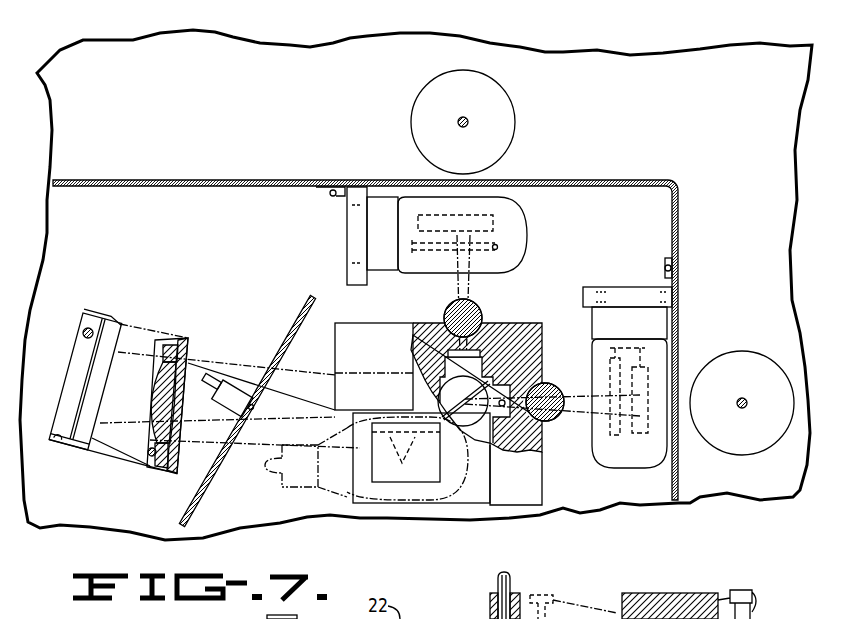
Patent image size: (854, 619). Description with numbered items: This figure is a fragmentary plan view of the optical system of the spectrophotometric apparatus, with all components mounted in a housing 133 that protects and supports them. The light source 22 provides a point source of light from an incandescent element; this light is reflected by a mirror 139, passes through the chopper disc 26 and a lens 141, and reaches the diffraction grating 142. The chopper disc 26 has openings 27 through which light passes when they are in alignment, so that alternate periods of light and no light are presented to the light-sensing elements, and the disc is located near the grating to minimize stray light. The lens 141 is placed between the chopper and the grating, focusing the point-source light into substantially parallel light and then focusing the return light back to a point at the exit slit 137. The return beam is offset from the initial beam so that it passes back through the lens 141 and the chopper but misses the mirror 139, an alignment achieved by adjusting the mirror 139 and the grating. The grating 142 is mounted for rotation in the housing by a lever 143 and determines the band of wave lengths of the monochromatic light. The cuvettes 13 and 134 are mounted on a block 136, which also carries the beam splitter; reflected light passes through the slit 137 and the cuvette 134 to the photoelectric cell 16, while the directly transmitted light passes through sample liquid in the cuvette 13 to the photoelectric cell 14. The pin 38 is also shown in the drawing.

The housing 133 is at (608, 182).
The photoelectric cell 16 is at (527, 236).
The cuvette 134 is at (479, 312).
The slit 137 is at (447, 343).
The block 136 is at (533, 327).
The cuvette 13 is at (543, 385).
The mirror 139 is at (400, 426).
The pivot pin 38 is at (516, 408).
The openings 27 is at (457, 412).
The photoelectric cell 14 is at (616, 458).
The lever 143 is at (109, 292).
The diffraction grating 142 is at (123, 334).
The lens 141 is at (190, 362).
The chopper disc 26 is at (306, 303).
The light source 22 is at (412, 502).